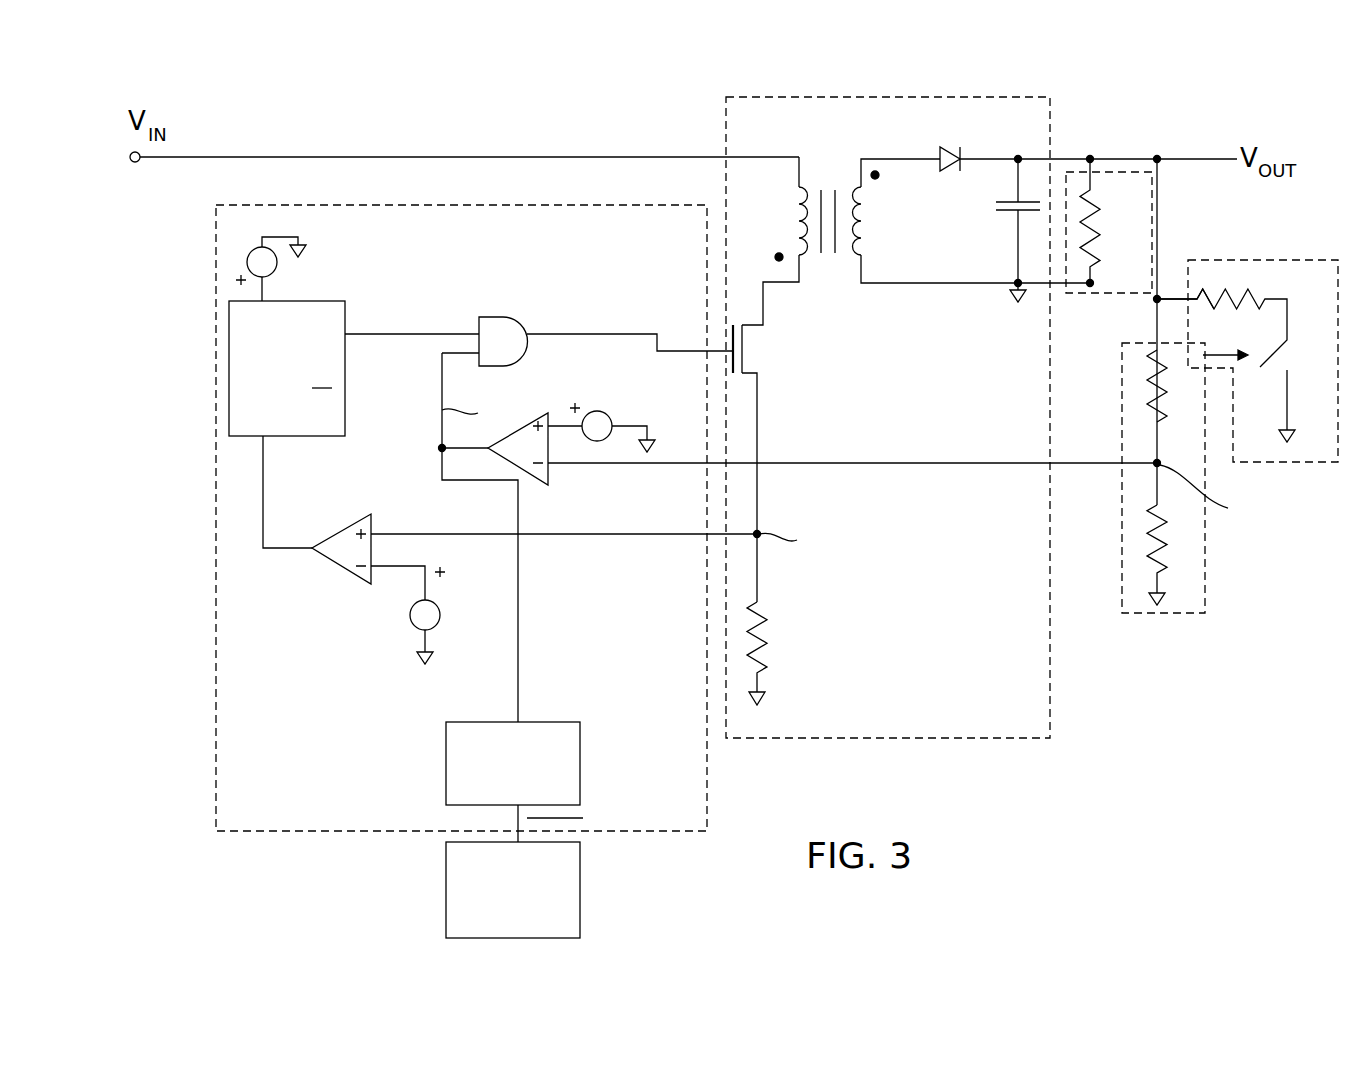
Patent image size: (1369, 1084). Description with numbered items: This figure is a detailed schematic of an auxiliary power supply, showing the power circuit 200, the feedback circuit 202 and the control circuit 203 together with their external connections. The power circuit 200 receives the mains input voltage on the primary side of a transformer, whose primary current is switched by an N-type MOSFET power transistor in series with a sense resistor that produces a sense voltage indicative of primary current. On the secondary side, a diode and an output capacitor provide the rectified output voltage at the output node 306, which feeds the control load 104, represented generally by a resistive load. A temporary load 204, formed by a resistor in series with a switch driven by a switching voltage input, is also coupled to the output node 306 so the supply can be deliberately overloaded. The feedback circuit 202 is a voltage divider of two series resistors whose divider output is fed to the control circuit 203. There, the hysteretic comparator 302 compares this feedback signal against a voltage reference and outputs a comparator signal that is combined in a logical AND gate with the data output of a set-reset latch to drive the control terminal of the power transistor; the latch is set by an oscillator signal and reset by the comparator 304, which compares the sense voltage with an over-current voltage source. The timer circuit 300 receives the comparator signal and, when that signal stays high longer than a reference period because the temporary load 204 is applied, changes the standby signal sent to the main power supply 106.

The control load 104 is at (1070, 172).
The main power supply 106 is at (580, 927).
The power circuit 200 is at (893, 738).
The feedback circuit 202 is at (1187, 613).
The control circuit 203 is at (216, 831).
The temporary load 204 is at (1285, 260).
The timer circuit 300 is at (552, 722).
The comparator 302 is at (540, 412).
The comparator 304 is at (510, 550).
The output node 306 is at (1158, 158).